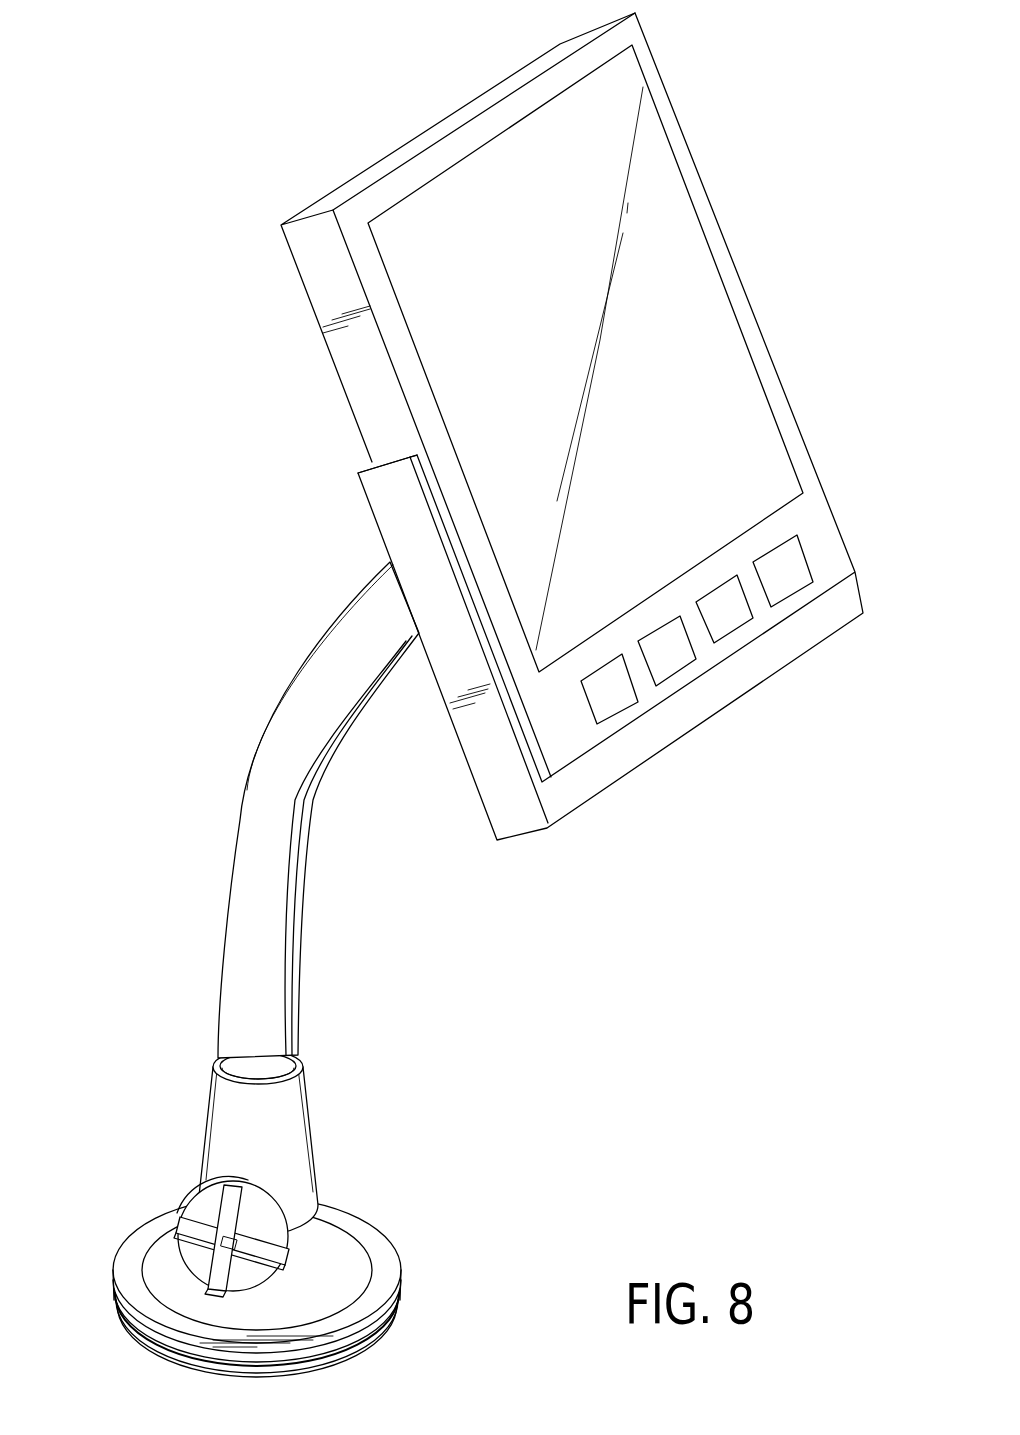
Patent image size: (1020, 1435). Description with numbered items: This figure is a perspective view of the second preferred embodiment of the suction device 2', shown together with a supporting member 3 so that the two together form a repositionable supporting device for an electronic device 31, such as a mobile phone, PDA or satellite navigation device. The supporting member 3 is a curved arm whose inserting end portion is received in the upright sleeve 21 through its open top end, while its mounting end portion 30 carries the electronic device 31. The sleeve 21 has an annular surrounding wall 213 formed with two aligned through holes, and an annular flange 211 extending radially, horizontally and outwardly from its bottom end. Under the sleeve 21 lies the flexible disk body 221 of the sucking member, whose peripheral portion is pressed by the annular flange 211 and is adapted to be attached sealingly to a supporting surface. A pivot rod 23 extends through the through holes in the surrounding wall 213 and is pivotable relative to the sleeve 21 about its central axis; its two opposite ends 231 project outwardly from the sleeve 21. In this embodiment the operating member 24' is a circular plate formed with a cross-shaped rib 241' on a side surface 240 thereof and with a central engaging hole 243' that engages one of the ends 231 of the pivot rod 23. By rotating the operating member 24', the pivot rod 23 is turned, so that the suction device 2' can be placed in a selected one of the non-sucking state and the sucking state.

The suction device 2' is at (274, 969).
The supporting member 3 is at (297, 672).
The sleeve 21 is at (209, 1138).
The annular flange 211 is at (150, 1233).
The annular surrounding wall 213 is at (217, 1117).
The flexible disk body 221 is at (153, 1353).
The pivot rod 23 is at (324, 1226).
The ends of the pivot rod 231 is at (266, 1232).
The operating member 24' is at (325, 1228).
The side surface 240 is at (324, 1226).
The cross-shaped rib 241' is at (324, 1254).
The central engaging hole 243' is at (341, 1255).
The mounting end portion 30 is at (612, 768).
The electronic device 31 is at (723, 265).